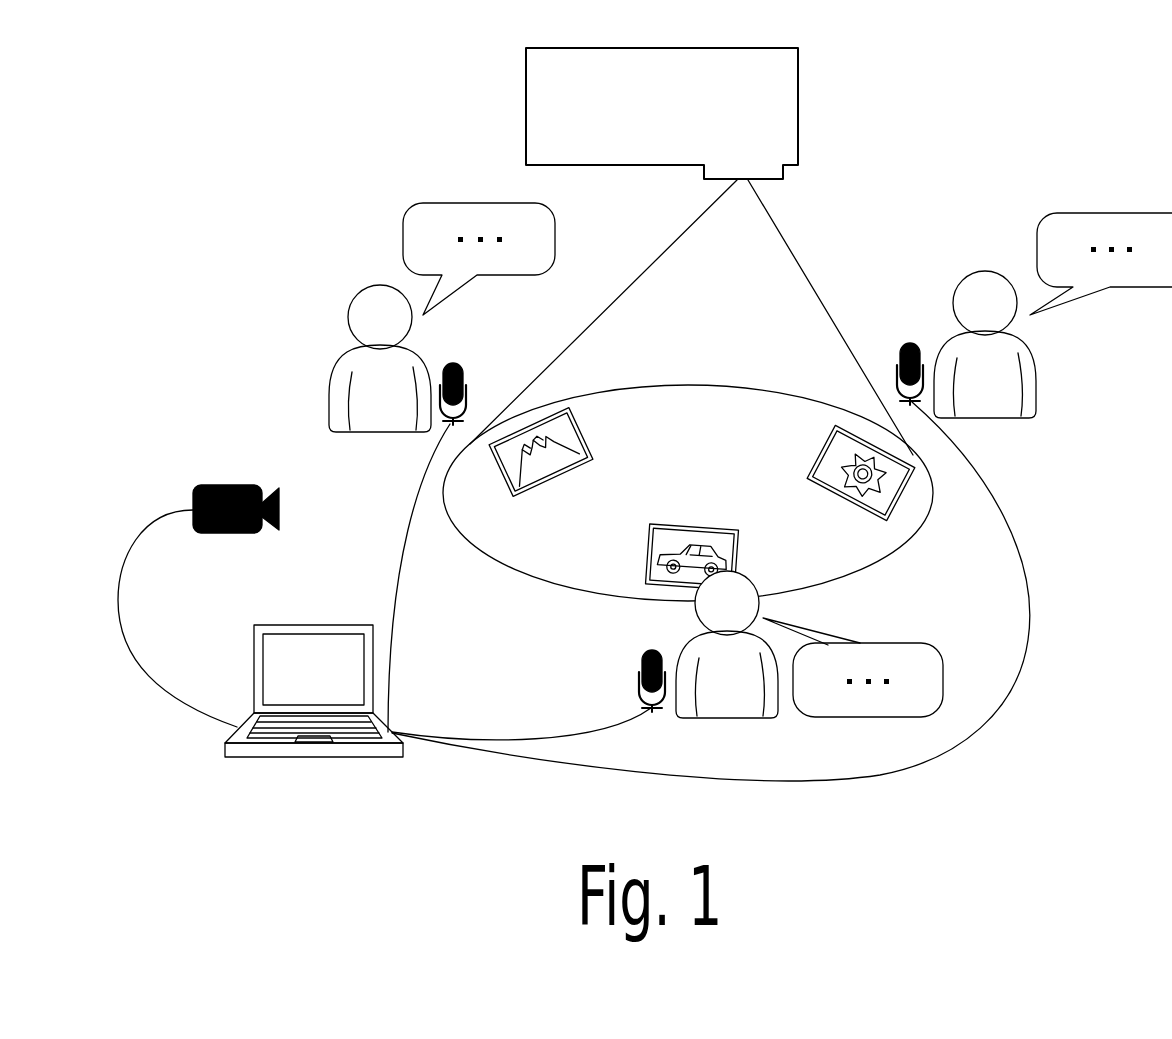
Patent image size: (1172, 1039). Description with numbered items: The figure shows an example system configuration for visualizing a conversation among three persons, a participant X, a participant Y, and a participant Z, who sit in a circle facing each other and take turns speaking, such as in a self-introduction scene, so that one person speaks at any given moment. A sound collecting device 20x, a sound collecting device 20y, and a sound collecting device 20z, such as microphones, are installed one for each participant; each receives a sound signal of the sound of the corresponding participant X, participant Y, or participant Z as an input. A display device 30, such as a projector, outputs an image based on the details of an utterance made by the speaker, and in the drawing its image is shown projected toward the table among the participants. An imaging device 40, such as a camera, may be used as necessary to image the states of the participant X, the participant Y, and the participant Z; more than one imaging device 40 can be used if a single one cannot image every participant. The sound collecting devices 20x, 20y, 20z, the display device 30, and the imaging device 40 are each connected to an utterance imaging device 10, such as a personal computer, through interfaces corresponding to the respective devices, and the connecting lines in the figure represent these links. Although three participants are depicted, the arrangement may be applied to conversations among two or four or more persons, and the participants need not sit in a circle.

The utterance imaging device 10 is at (313, 625).
The sound collecting device 20x is at (458, 362).
The sound collecting device 20y is at (910, 343).
The sound collecting device 20z is at (653, 650).
The display device 30 is at (730, 47).
The imaging device 40 is at (226, 485).
The participant X is at (380, 285).
The participant Y is at (985, 272).
The participant Z is at (724, 720).